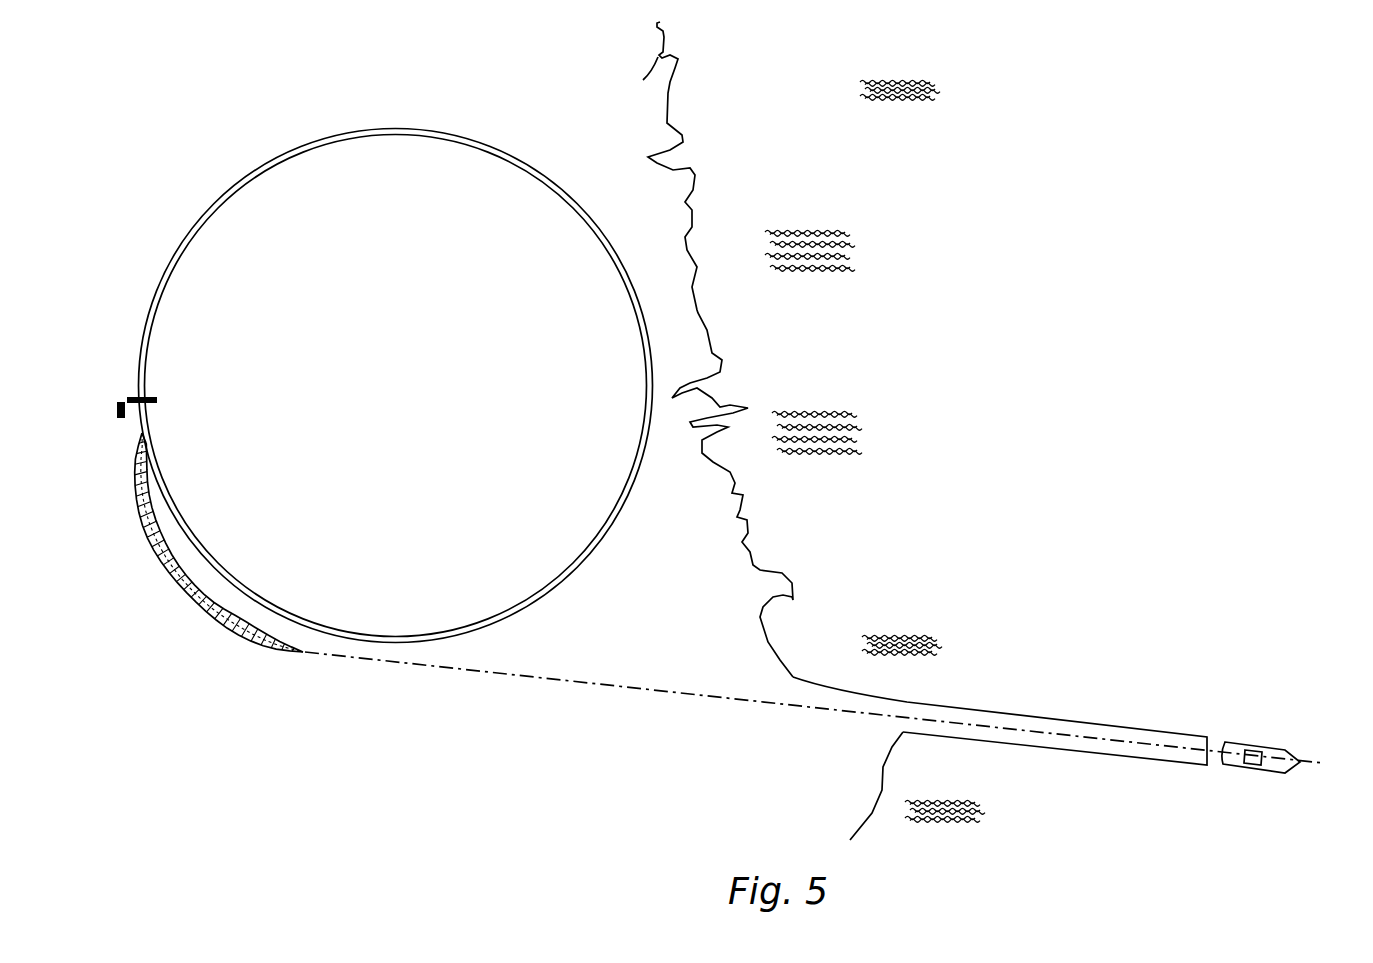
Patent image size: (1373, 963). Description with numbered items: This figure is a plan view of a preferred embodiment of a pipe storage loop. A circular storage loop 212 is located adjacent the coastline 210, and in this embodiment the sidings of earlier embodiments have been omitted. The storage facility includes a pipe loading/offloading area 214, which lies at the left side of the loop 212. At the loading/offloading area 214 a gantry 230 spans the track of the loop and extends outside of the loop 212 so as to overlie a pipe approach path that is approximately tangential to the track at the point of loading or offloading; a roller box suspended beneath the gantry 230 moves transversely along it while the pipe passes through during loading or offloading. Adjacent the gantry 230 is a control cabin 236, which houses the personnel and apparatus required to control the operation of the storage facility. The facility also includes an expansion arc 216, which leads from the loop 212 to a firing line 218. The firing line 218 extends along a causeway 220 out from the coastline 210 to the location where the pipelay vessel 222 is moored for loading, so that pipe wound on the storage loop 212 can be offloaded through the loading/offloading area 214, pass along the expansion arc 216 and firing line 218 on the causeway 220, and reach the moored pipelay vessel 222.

The coastline 210 is at (697, 175).
The circular storage loop 212 is at (438, 138).
The pipe loading/offloading area 214 is at (115, 374).
The expansion arc 216 is at (223, 635).
The firing line 218 is at (540, 678).
The causeway 220 is at (985, 717).
The pipelay vessel 222 is at (1262, 750).
The gantry 230 is at (131, 397).
The control cabin 236 is at (117, 410).